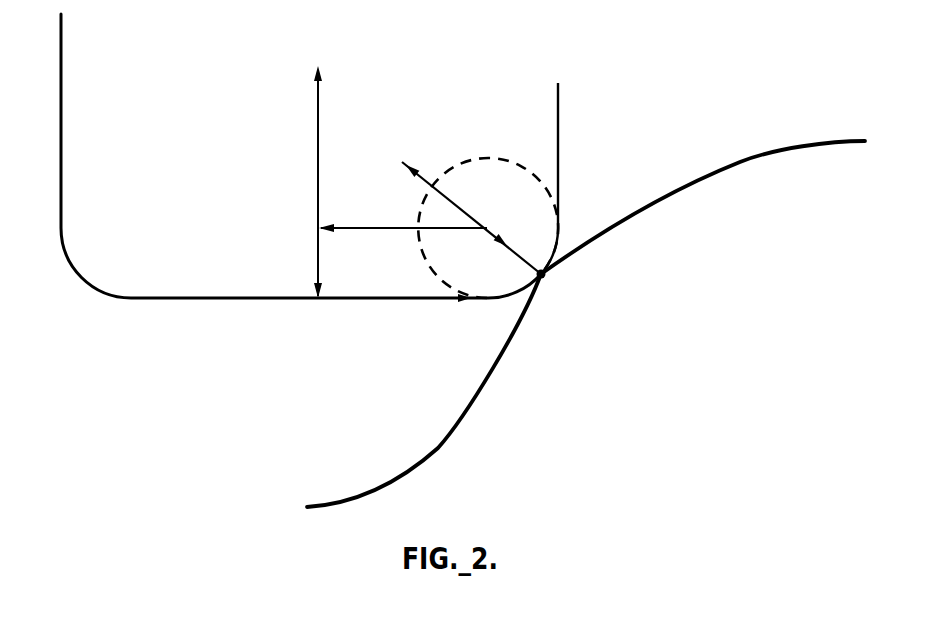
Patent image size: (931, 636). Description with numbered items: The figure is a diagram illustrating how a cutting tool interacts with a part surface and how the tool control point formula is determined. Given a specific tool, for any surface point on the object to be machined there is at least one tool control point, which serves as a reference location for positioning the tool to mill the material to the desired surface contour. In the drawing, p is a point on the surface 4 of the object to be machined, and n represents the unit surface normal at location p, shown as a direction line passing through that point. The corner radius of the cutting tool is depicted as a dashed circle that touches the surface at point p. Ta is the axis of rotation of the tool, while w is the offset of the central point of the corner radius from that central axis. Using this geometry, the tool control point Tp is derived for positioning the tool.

The surface 4 is at (450, 433).
The axis of rotation of the tool Ta is at (332, 168).
The tool control point Tp is at (301, 189).
The offset of the central point of corner radius from the central axis w is at (403, 217).
The unit surface normal n is at (471, 213).
The point on the surface p is at (560, 288).